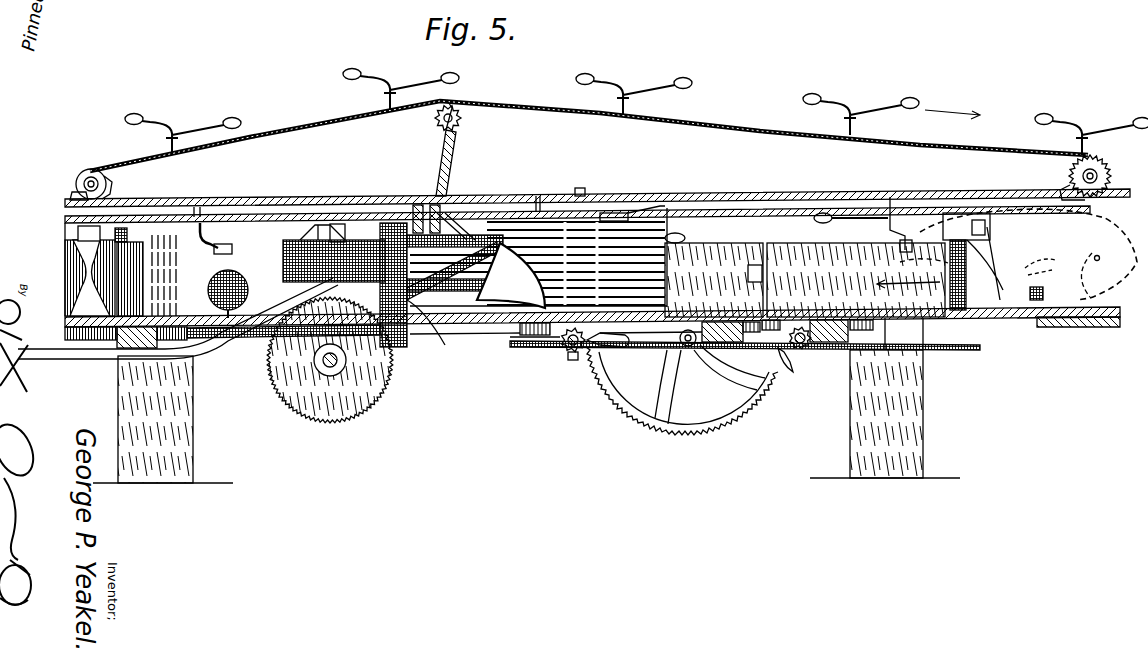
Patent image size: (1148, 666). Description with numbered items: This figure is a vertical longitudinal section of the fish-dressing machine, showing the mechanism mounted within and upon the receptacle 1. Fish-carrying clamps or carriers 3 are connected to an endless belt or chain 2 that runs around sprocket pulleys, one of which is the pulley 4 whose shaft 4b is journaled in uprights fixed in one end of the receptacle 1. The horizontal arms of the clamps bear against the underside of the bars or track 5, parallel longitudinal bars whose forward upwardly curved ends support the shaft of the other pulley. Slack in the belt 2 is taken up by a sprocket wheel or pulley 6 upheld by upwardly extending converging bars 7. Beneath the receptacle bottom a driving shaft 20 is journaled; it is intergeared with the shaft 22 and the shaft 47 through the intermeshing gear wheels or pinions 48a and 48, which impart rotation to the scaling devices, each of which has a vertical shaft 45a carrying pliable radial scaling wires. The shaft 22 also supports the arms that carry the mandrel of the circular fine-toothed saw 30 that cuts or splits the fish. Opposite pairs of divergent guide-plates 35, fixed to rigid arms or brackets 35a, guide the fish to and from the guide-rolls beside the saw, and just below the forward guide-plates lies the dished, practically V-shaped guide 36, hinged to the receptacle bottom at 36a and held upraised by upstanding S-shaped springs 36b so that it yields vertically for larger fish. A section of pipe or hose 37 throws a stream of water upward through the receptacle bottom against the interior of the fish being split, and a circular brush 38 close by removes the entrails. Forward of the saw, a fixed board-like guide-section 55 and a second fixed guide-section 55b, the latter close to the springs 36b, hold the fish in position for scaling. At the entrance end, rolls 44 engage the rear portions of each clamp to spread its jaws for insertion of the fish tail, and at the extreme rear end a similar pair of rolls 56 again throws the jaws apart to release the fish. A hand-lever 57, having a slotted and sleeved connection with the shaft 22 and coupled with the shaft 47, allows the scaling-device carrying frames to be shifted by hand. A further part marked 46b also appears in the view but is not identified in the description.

The receptacle 1 is at (120, 269).
The endless belt or chain 2 is at (589, 136).
The fish-carrying clamps or carriers 3 is at (1078, 130).
The sprocket pinion or pulley 4 is at (73, 172).
The shaft 4b is at (76, 194).
The bars or track 5 is at (262, 200).
The sprocket wheel or pulley 6 is at (457, 113).
The upwardly extending converging bars 7 is at (438, 150).
The shaft 20 is at (686, 355).
The shaft 22 is at (578, 362).
The circular fine-toothed saw 30 is at (330, 405).
The divergent guide-plates 35 is at (308, 223).
The rigid arms or brackets 35a is at (338, 220).
The dished or V-shaped guide 36 is at (458, 298).
The hinge or pivot 36a is at (545, 335).
The S-shaped springs 36b is at (490, 310).
The pipe or hose 37 is at (116, 360).
The circular or cylindric brush 38 is at (228, 330).
The rolls 44 is at (1028, 254).
The vertical shaft 45a is at (617, 213).
The fish head 46b is at (1093, 259).
The shaft 47 is at (812, 350).
The gear wheel or pinion 48 is at (717, 421).
The gear wheels or pinions 48a is at (795, 375).
The fixed board-like guide-section 55 is at (856, 280).
The second fixed guide-section 55b is at (712, 262).
The rolls 56 is at (74, 235).
The hand-lever 57 is at (745, 355).